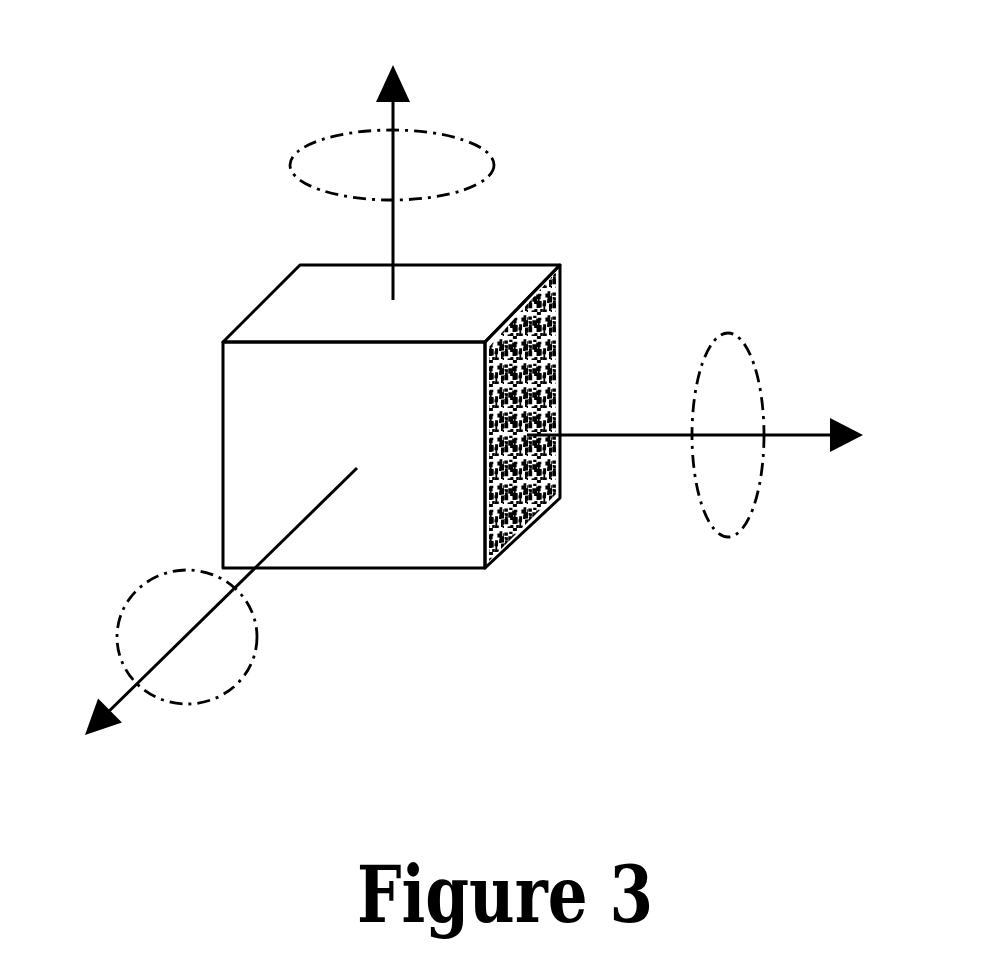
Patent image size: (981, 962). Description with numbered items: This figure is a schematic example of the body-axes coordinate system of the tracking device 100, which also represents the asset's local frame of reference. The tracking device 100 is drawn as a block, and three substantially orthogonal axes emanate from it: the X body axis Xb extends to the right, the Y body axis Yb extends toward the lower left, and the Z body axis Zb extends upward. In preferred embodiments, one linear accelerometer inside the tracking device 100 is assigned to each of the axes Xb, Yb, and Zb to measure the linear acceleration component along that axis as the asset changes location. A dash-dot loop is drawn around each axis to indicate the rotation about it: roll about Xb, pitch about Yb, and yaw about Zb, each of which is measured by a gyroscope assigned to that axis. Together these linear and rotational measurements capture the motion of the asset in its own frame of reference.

The tracking device 100 is at (417, 417).
The X body axis Xb is at (696, 461).
The Y body axis Yb is at (221, 618).
The Z body axis Zb is at (402, 155).